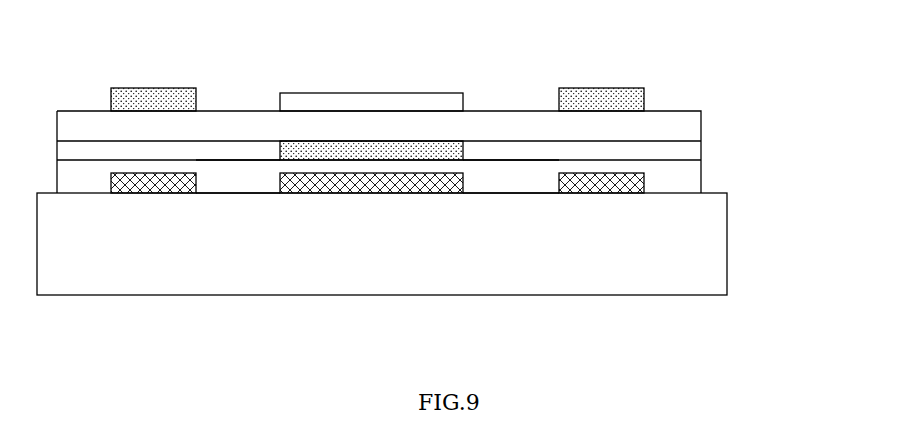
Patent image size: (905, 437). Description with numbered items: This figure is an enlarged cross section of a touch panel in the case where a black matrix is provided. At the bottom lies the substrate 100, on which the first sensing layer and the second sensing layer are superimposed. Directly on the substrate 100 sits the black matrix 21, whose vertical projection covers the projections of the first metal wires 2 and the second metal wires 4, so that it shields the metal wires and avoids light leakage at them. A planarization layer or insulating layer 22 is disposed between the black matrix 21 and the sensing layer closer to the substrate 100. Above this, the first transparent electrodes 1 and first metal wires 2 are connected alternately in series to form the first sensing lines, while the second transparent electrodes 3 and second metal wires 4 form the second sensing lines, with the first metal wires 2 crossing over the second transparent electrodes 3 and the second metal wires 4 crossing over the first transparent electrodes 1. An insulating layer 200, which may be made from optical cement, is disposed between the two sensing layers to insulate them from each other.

The substrate 100 is at (657, 284).
The insulating layer 200 is at (503, 132).
The first transparent electrode 1 is at (165, 151).
The first metal wire 2 is at (405, 152).
The second transparent electrode 3 is at (332, 108).
The second metal wire 4 is at (140, 100).
The black matrix 21 is at (145, 183).
The planarization layer or insulating layer 22 is at (248, 180).